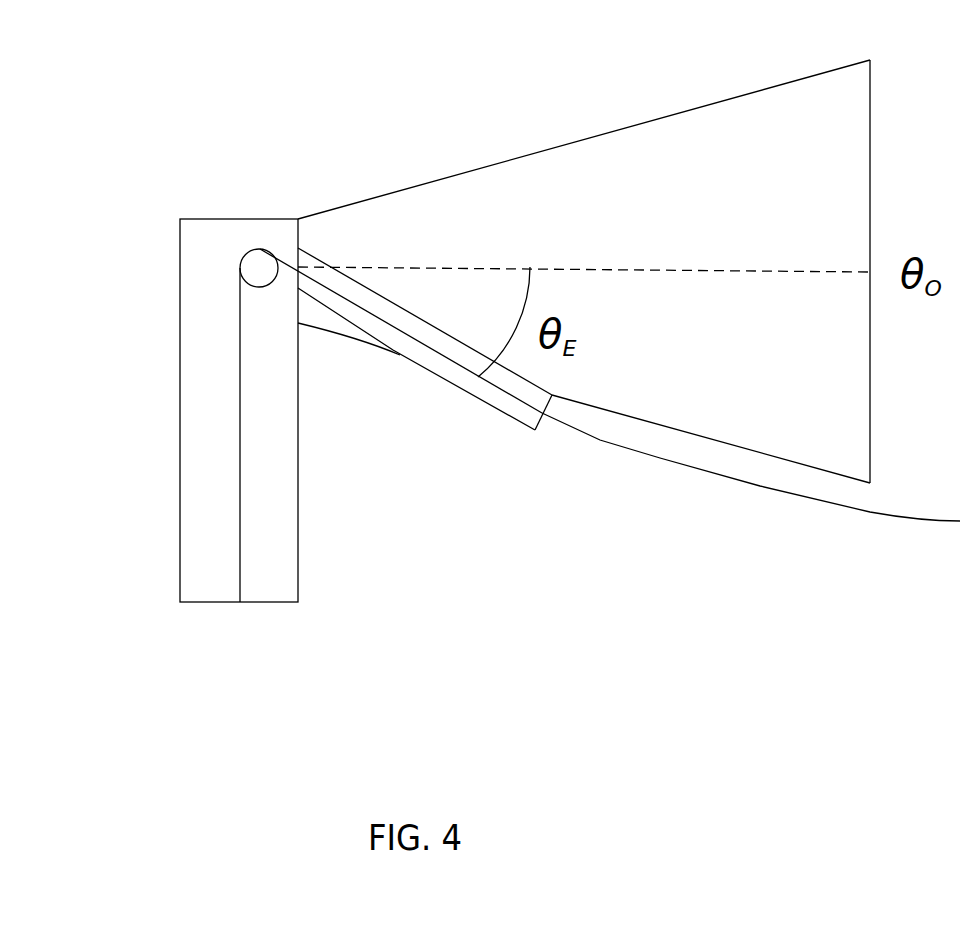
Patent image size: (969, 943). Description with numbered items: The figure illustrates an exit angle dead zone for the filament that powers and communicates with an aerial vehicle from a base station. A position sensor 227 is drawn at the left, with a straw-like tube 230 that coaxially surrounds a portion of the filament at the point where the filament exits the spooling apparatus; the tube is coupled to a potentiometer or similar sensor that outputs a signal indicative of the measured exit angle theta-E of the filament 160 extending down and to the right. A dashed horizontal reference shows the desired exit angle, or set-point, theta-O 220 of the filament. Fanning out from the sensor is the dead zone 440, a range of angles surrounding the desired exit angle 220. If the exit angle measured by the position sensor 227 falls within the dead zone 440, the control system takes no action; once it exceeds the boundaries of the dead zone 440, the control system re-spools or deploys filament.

The waveguide 160 is at (637, 453).
The desired exit angle θ_O 220 is at (913, 250).
The position sensor 227 is at (264, 463).
The straw-like tube 230 is at (368, 284).
The dead zone 440 is at (620, 130).